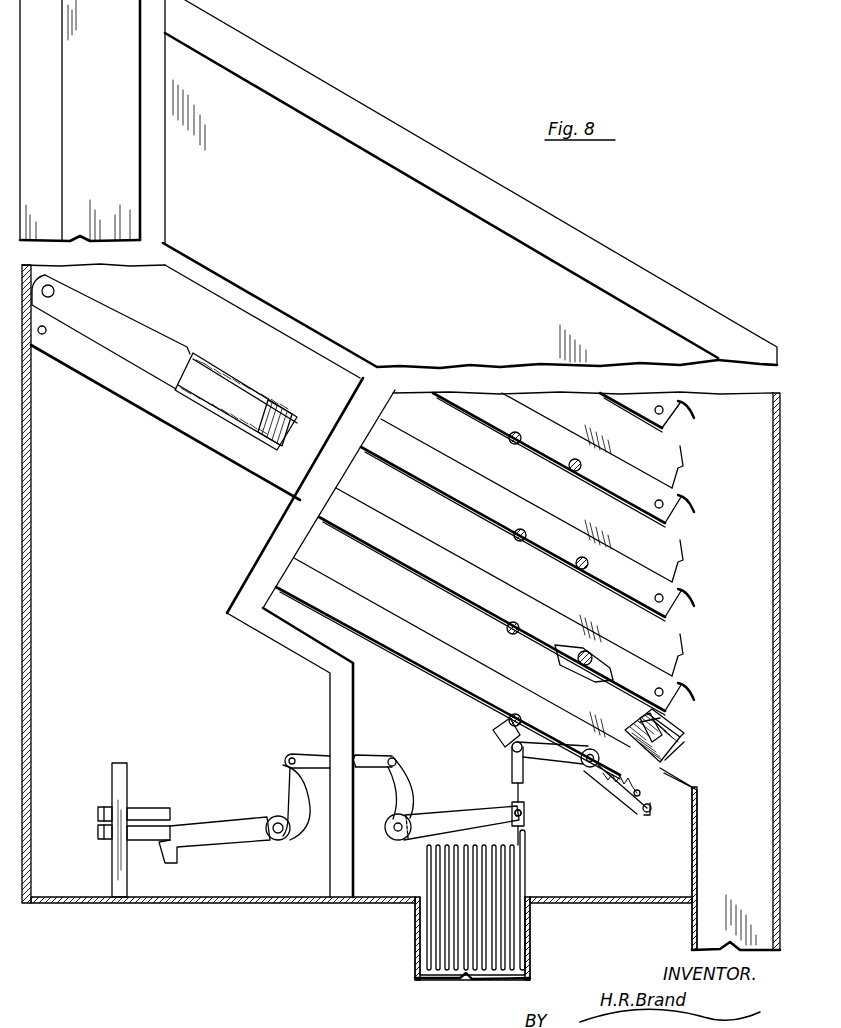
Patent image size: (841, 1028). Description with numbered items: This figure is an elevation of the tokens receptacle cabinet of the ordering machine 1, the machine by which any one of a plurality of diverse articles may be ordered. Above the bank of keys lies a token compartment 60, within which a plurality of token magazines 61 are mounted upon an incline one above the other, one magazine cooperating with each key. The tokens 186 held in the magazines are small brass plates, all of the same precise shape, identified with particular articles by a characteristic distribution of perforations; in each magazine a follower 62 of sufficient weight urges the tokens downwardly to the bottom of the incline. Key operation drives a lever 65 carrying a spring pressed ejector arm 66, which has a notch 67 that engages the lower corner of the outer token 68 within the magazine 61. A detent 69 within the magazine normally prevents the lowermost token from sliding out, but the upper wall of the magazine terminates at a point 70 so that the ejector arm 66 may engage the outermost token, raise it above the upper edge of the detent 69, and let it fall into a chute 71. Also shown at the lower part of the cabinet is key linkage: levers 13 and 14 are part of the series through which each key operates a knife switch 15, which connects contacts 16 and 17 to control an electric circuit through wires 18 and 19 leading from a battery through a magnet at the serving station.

The ordering machine 1 is at (647, 254).
The token compartment 60 is at (363, 263).
The follower 62 is at (164, 362).
The tokens 186 is at (292, 411).
The token magazines 61 is at (674, 549).
The lever 65 is at (548, 762).
The ejector arm 66 is at (660, 773).
The notch 67 is at (682, 746).
The outer token 68 is at (686, 736).
The detent 69 is at (680, 767).
The terminating point of upper wall 70 is at (668, 728).
The lever 13 is at (445, 816).
The lever 14 is at (292, 795).
The knife switch 15 is at (180, 860).
The contact 16 is at (162, 809).
The contact 17 is at (152, 842).
The wire 18 is at (103, 807).
The wire 19 is at (103, 842).
The chute 71 is at (698, 916).